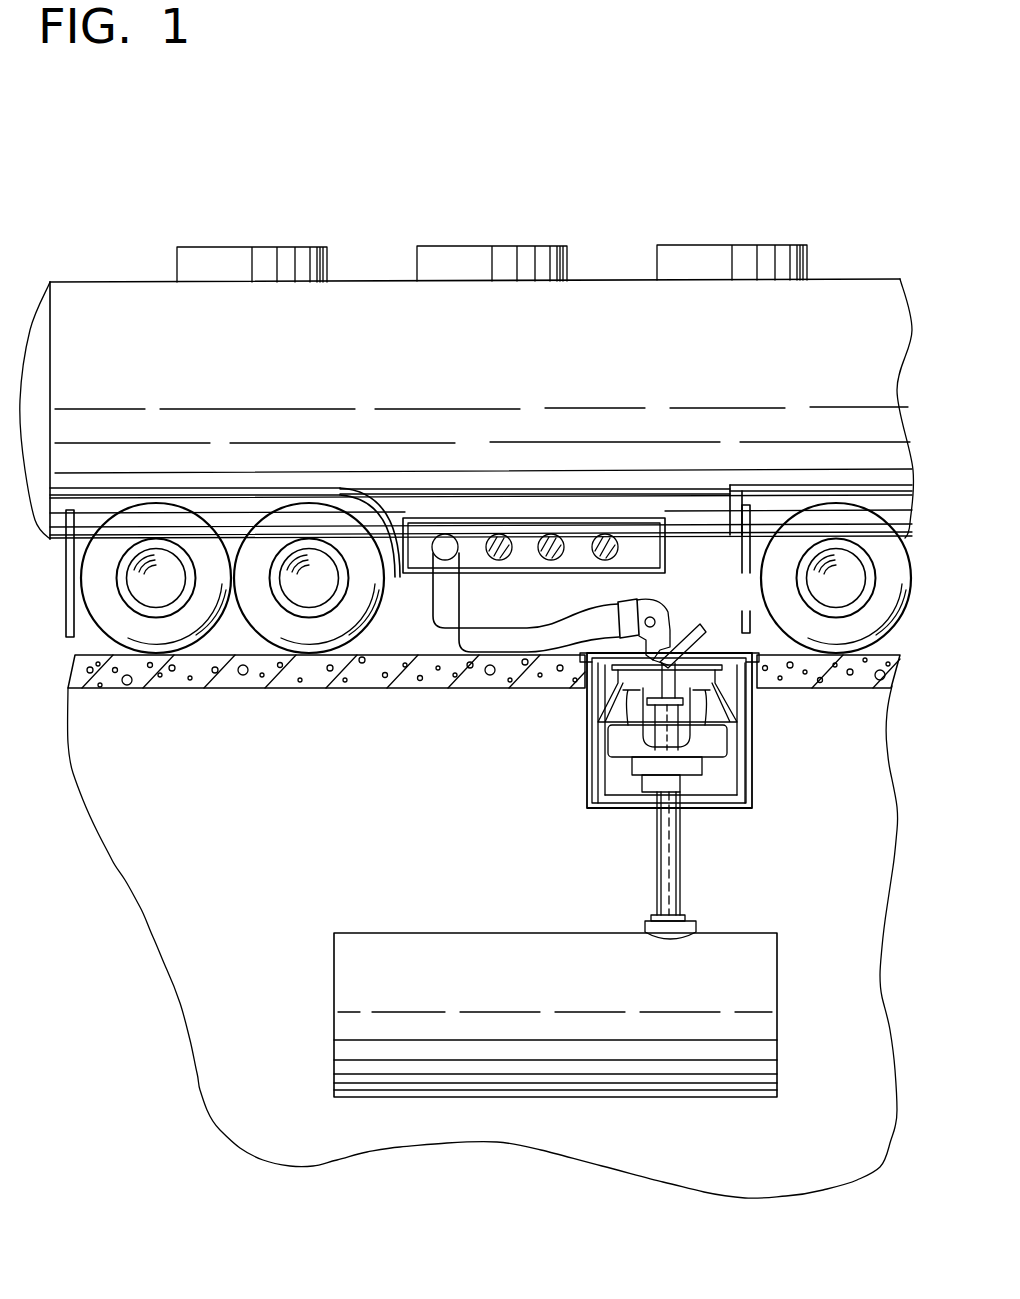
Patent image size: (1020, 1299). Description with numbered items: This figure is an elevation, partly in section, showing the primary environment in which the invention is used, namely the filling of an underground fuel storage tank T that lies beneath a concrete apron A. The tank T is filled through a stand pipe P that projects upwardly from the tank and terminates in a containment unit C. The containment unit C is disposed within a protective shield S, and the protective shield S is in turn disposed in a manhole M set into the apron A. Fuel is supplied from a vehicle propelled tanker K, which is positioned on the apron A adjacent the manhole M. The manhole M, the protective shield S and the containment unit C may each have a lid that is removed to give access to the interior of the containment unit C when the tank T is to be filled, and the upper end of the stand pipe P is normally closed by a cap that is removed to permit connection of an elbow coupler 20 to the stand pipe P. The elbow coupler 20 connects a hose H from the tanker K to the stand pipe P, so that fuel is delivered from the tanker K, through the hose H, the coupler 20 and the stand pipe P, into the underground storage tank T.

The vehicle propelled tanker K is at (134, 282).
The concrete apron A is at (70, 672).
The hose H is at (517, 626).
The elbow coupler 20 is at (670, 613).
The manhole M is at (587, 697).
The protective shield S is at (605, 707).
The containment unit C is at (625, 745).
The stand pipe P is at (678, 728).
The underground fuel storage tank T is at (467, 933).